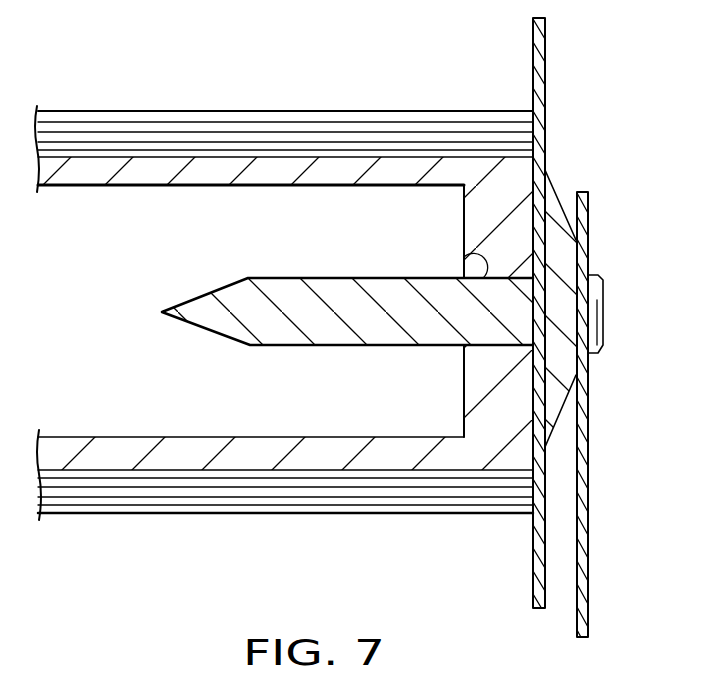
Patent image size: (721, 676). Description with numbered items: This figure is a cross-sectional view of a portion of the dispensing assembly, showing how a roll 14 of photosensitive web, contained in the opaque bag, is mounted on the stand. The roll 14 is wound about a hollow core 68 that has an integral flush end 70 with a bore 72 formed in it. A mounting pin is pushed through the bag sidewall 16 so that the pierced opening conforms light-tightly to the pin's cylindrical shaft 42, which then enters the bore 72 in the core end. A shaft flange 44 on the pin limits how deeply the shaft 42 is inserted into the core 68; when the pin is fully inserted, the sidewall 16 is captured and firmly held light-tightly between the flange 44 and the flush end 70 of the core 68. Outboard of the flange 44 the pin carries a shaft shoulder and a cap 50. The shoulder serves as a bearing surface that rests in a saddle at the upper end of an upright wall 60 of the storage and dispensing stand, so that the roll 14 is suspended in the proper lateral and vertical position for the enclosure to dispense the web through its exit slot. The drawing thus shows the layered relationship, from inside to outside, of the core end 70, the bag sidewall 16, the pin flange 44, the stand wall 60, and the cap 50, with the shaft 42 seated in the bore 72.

The roll 14 is at (284, 309).
The sidewall 16 is at (540, 88).
The cylindrical shaft 42 is at (347, 295).
The shaft flange 44 is at (587, 236).
The cap 50 is at (604, 300).
The upright wall 60 is at (590, 412).
The hollow core 68 is at (196, 176).
The flush end 70 is at (500, 187).
The bore 72 is at (464, 257).